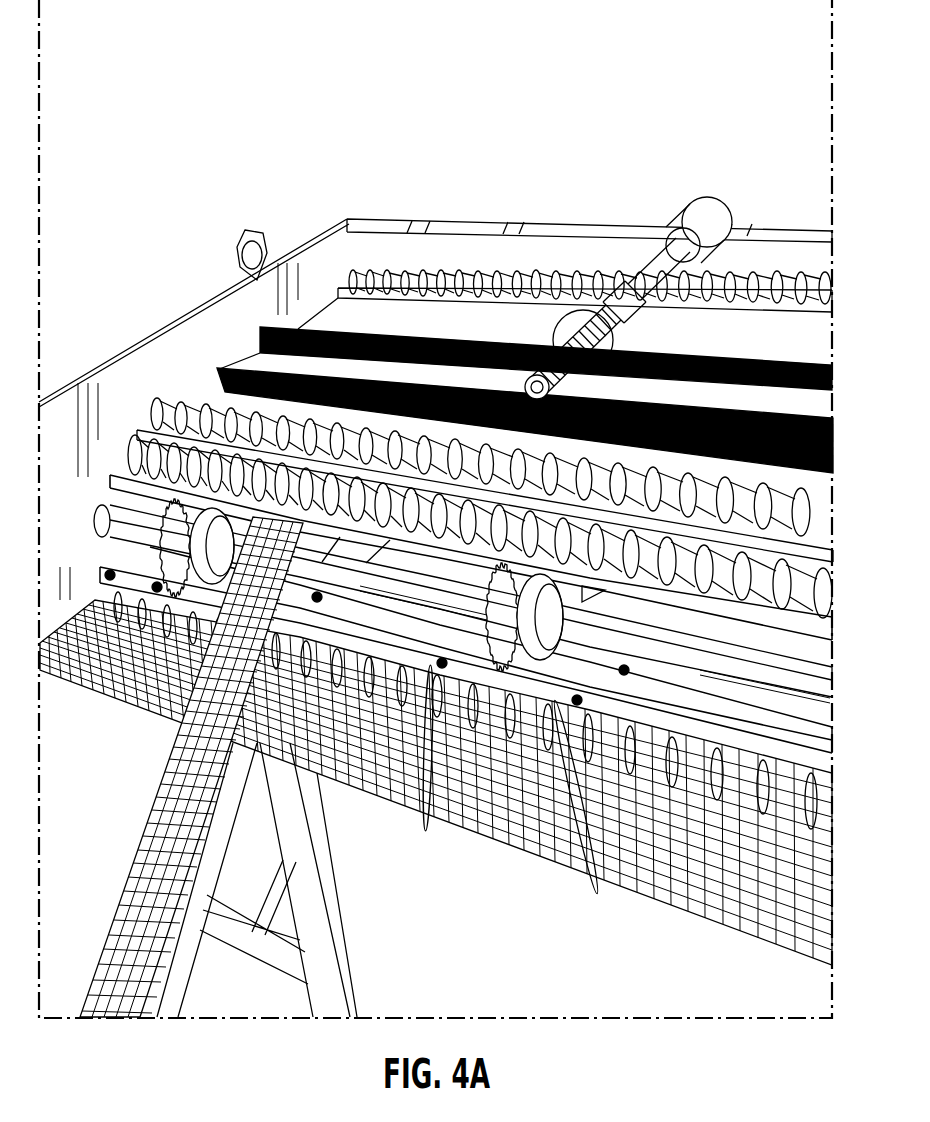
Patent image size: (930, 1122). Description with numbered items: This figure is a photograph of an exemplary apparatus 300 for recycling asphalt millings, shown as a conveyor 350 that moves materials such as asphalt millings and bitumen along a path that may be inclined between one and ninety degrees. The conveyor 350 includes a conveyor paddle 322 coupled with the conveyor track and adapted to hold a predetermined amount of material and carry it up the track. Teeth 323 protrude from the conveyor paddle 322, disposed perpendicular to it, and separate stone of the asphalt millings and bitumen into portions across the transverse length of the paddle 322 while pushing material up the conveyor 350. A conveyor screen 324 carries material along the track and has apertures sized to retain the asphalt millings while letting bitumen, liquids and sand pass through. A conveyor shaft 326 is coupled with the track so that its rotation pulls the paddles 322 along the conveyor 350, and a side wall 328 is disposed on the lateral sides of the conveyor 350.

The apparatus for recycling asphalt millings 300 is at (427, 212).
The conveyor paddle 322 is at (360, 460).
The teeth 323 is at (470, 465).
The conveyor screen 324 is at (494, 822).
The conveyor shaft 326 is at (640, 285).
The side wall 328 is at (257, 298).
The conveyor 350 is at (197, 385).